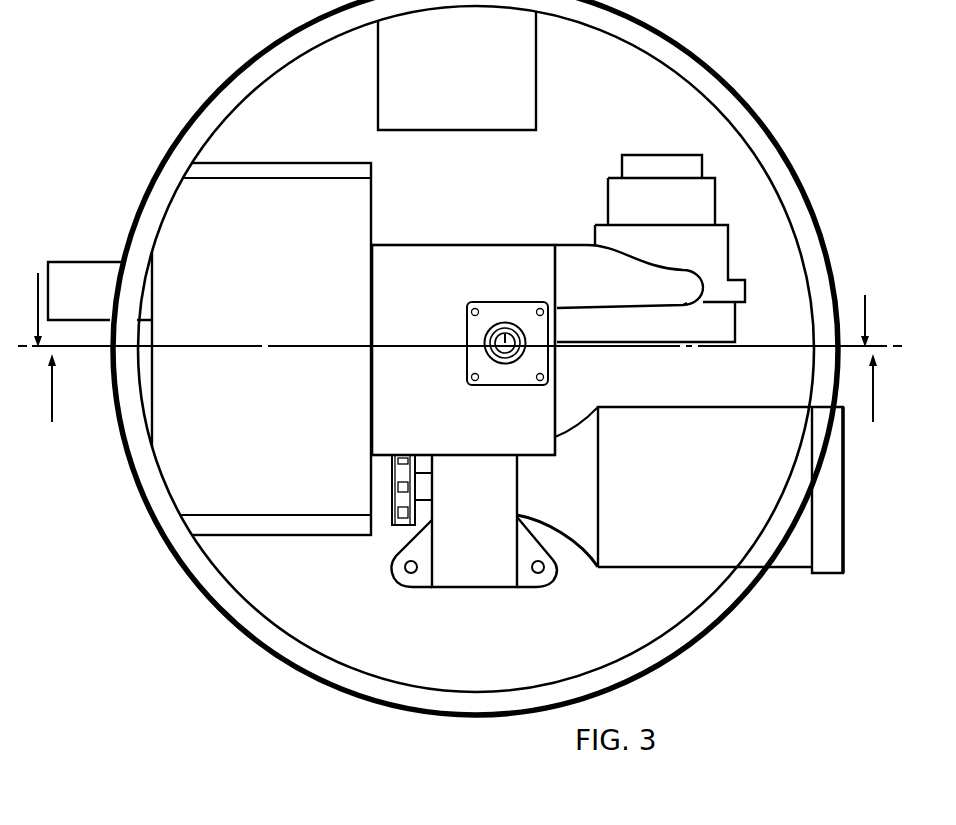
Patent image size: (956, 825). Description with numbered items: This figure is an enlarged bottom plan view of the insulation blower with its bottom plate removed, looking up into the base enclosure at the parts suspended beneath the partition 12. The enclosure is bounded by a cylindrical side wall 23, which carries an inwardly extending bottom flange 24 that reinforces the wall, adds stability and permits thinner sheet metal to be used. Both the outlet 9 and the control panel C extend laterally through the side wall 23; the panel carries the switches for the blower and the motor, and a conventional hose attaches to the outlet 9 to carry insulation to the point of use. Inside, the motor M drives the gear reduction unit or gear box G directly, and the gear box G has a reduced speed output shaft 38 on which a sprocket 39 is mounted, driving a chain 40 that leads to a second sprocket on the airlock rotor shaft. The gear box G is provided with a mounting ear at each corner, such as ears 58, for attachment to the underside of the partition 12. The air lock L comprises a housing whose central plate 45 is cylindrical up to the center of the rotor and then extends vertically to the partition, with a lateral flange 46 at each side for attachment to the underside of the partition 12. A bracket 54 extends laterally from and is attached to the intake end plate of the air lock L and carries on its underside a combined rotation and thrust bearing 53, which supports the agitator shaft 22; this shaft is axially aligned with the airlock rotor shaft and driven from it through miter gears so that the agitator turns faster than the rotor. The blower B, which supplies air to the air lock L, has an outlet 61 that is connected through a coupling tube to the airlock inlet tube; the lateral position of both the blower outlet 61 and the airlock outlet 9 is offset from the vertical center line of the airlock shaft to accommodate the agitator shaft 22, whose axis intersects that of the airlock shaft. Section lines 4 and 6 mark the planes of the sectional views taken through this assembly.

The section line 4- 4 is at (444, 309).
The section line 6- 6 is at (470, 391).
The outlet 9 is at (99, 263).
The partition 12 is at (589, 104).
The agitator shaft 22 is at (503, 330).
The side wall 23 is at (300, 677).
The bottom flange 24 is at (392, 687).
The reduced speed output shaft 38 is at (424, 487).
The sprocket 39 is at (393, 515).
The chain 40 is at (418, 460).
The central plate 45 is at (278, 276).
The lateral flange 46 is at (326, 160).
The combined rotation and thrust bearing 53 is at (472, 330).
The bracket 54 is at (438, 244).
The mounting ears 58 is at (411, 588).
The outlet 61 is at (571, 254).
The blower B is at (599, 198).
The control panel C is at (370, 67).
The gear reduction unit G is at (498, 597).
The air lock L is at (382, 184).
The motor M is at (692, 399).